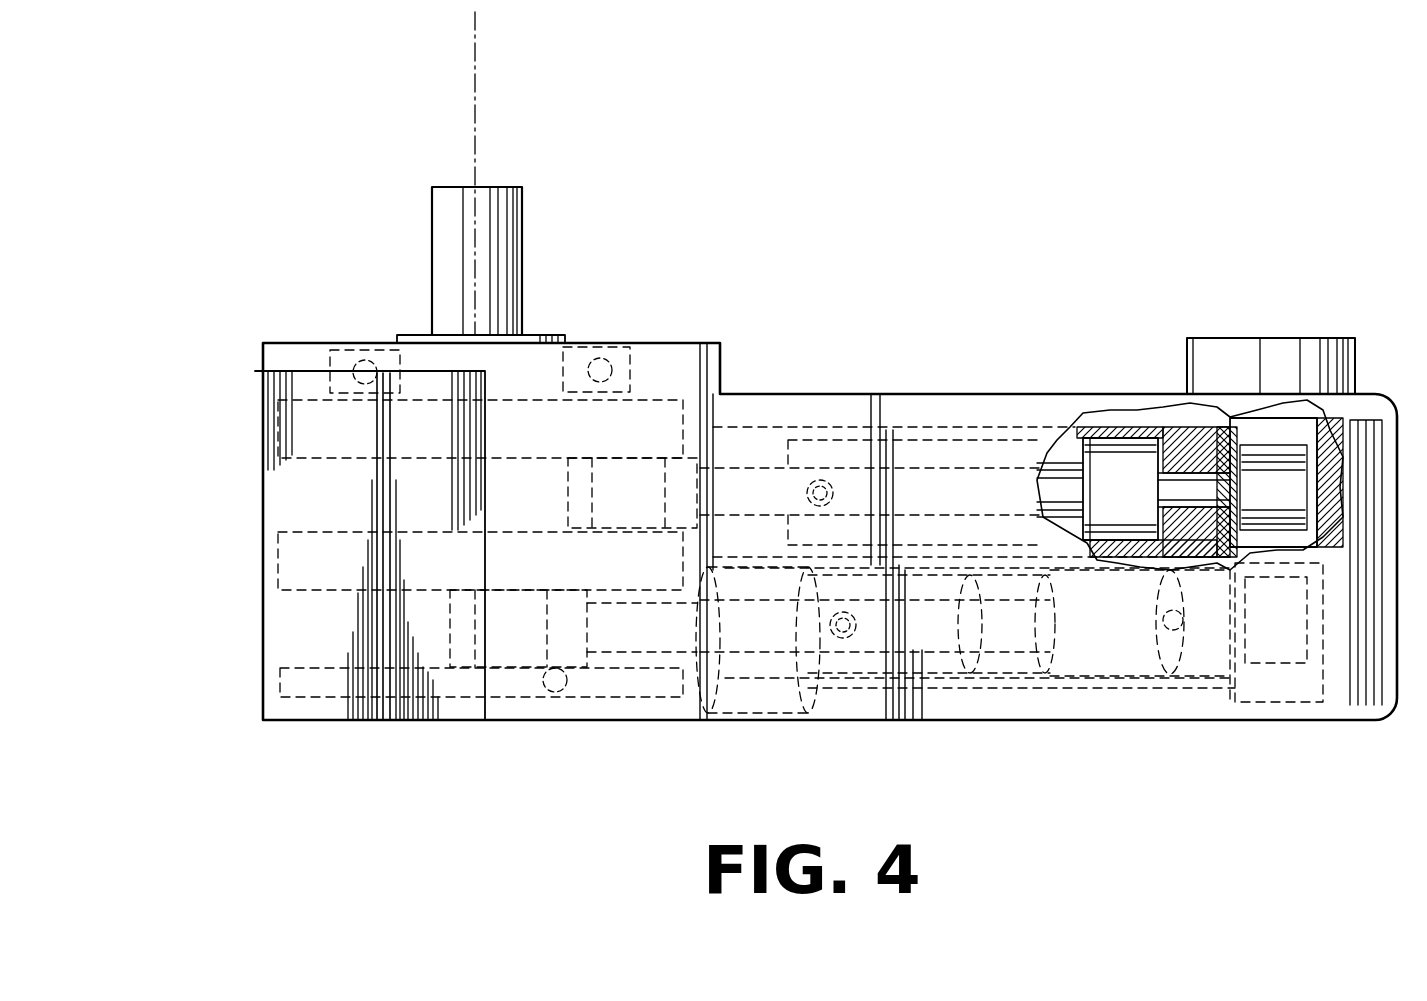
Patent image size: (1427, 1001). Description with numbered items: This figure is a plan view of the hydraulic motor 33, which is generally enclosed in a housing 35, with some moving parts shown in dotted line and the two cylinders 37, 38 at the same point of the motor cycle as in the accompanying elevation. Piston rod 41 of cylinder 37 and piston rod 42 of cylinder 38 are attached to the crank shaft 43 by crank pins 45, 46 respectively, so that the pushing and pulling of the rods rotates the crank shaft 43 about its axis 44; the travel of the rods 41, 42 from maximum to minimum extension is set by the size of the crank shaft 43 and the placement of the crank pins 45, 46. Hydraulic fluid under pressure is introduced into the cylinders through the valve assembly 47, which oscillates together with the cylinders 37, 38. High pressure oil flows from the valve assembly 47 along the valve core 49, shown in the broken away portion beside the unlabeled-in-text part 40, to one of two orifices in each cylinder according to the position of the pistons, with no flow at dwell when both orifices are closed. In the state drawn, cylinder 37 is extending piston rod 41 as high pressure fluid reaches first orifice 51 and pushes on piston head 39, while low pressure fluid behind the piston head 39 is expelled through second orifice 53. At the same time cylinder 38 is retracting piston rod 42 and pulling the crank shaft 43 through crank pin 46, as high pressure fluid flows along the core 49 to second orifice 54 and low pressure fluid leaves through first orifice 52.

The motor 33 is at (233, 313).
The housing 35 is at (848, 394).
The cylinder 37 is at (808, 715).
The cylinder 38 is at (1097, 427).
The piston head 39 is at (1018, 650).
The piston 40 is at (1112, 463).
The piston rod 41 is at (915, 645).
The piston rod 42 is at (750, 495).
The crank shaft 43 is at (445, 543).
The axis 44 is at (475, 88).
The crank pin 45 is at (498, 632).
The crank pin 46 is at (623, 497).
The valve assembly 47 is at (1317, 373).
The valve core 49 is at (1264, 418).
The first orifice 51 is at (1187, 623).
The first orifice 52 is at (1183, 493).
The second orifice 53 is at (857, 619).
The second orifice 54 is at (830, 480).